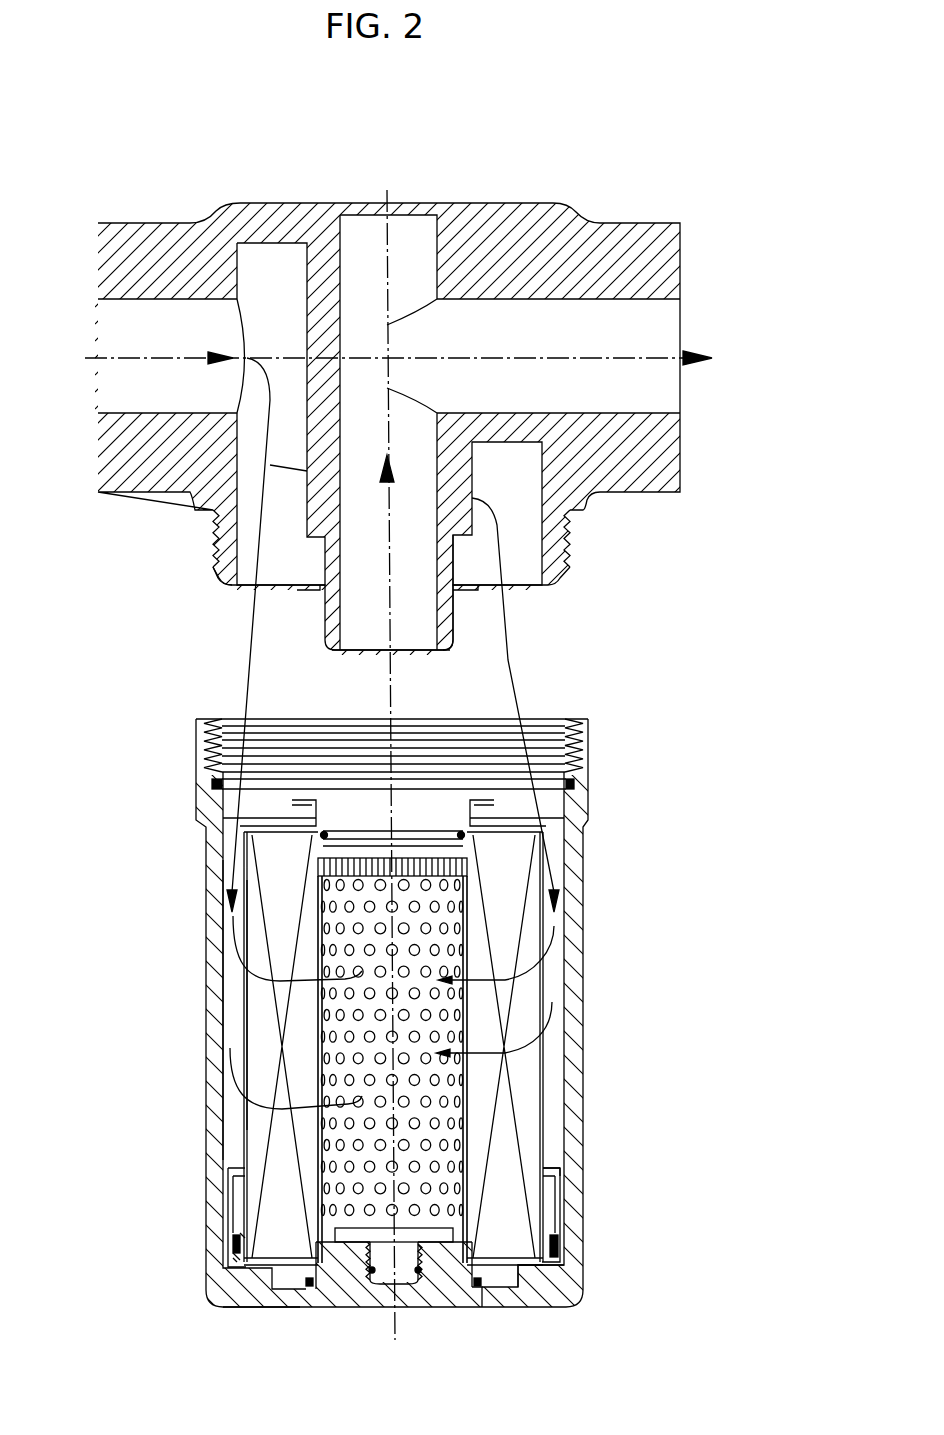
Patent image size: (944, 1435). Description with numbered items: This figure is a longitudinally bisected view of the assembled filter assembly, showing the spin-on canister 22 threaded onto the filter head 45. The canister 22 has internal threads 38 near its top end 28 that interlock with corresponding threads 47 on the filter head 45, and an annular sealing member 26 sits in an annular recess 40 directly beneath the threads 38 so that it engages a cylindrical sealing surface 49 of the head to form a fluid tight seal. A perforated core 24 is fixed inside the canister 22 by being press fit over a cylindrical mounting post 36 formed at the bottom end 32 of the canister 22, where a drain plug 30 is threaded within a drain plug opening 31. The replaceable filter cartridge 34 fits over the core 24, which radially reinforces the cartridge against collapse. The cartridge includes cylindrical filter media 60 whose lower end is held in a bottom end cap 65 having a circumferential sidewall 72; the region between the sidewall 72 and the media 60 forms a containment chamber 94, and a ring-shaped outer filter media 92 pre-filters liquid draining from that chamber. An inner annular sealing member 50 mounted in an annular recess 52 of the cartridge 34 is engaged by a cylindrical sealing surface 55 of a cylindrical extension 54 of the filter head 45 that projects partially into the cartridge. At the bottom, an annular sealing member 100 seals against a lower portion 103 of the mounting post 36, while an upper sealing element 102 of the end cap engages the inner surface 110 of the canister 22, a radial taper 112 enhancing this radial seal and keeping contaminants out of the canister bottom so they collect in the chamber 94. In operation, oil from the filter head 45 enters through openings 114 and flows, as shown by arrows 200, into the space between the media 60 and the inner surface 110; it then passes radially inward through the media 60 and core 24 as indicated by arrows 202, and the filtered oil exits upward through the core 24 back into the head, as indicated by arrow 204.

The canister 22 is at (198, 912).
The perforated core 24 is at (452, 1087).
The annular sealing member 26 is at (574, 782).
The top end of the canister 28 is at (208, 722).
The drain plug 30 is at (404, 1308).
The drain plug opening 31 is at (372, 1272).
The bottom end of the canister 32 is at (228, 1306).
The filter cartridge 34 is at (240, 1134).
The cylindrical mounting post 36 is at (462, 1248).
The internal threads 38 is at (558, 722).
The annular recess 40 is at (576, 792).
The filter head 45 is at (680, 262).
The threads 47 is at (213, 540).
The cylindrical sealing surface 49 is at (218, 578).
The inner annular sealing member 50 is at (327, 836).
The annular recess 52 is at (320, 832).
The cylindrical extension 54 is at (462, 618).
The cylindrical sealing surface 55 is at (453, 640).
The cylindrical filter media 60 is at (544, 980).
The bottom end cap 65 is at (583, 1269).
The circumferential sidewall 72 is at (562, 1194).
The outer filter media 92 is at (558, 1250).
The containment chamber 94 is at (240, 1213).
The annular sealing member 100 is at (478, 1286).
The upper sealing element 102 is at (231, 1177).
The lower portion of the mounting post 103 is at (472, 1307).
The inner surface of the canister 110 is at (224, 1030).
The radial taper 112 is at (563, 1164).
The openings 114 is at (530, 506).
The arrows 200 is at (515, 683).
The arrows 202 is at (241, 1088).
The arrow 204 is at (390, 665).